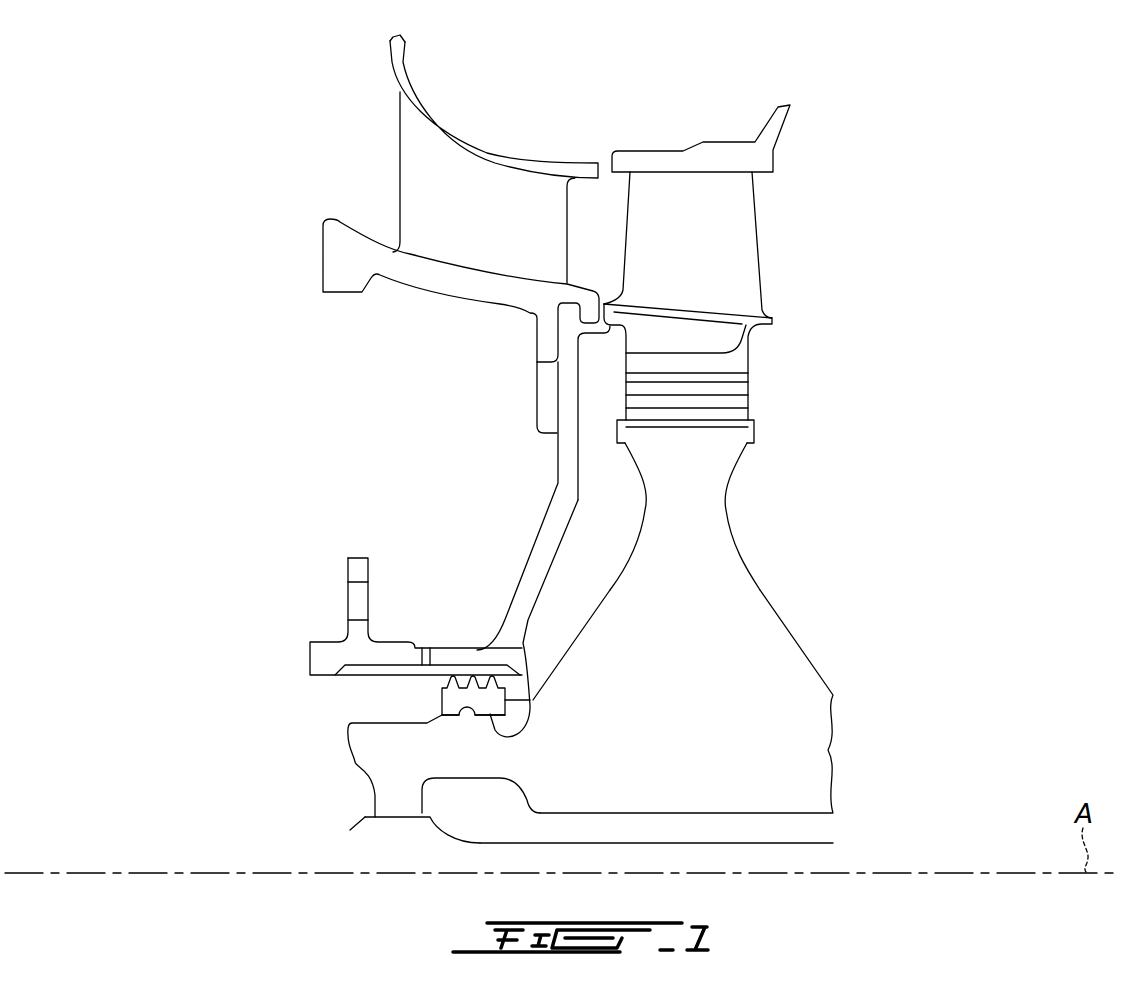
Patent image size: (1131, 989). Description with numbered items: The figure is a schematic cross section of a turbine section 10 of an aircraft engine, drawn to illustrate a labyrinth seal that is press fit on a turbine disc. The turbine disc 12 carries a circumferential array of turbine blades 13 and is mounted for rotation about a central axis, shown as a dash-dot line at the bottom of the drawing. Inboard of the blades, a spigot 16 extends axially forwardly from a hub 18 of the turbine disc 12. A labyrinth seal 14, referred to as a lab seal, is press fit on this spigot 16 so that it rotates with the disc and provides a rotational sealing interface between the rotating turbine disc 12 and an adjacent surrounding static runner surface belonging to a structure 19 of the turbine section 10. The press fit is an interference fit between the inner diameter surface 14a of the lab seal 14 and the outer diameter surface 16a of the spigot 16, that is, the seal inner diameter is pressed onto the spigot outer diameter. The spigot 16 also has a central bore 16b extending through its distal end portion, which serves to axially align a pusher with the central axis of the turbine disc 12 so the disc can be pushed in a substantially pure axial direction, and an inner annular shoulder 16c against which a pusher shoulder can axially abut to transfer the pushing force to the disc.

The turbine section 10 is at (190, 191).
The turbine disc 12 is at (779, 479).
The turbine blades 13 is at (733, 237).
The labyrinth seal 14 is at (445, 694).
The inner diameter surface 14a is at (523, 644).
The spigot 16 is at (447, 743).
The outer diameter surface 16a is at (460, 714).
The central bore 16b is at (398, 817).
The inner annular shoulder 16c is at (373, 800).
The hub 18 is at (708, 635).
The structure 19 is at (477, 652).